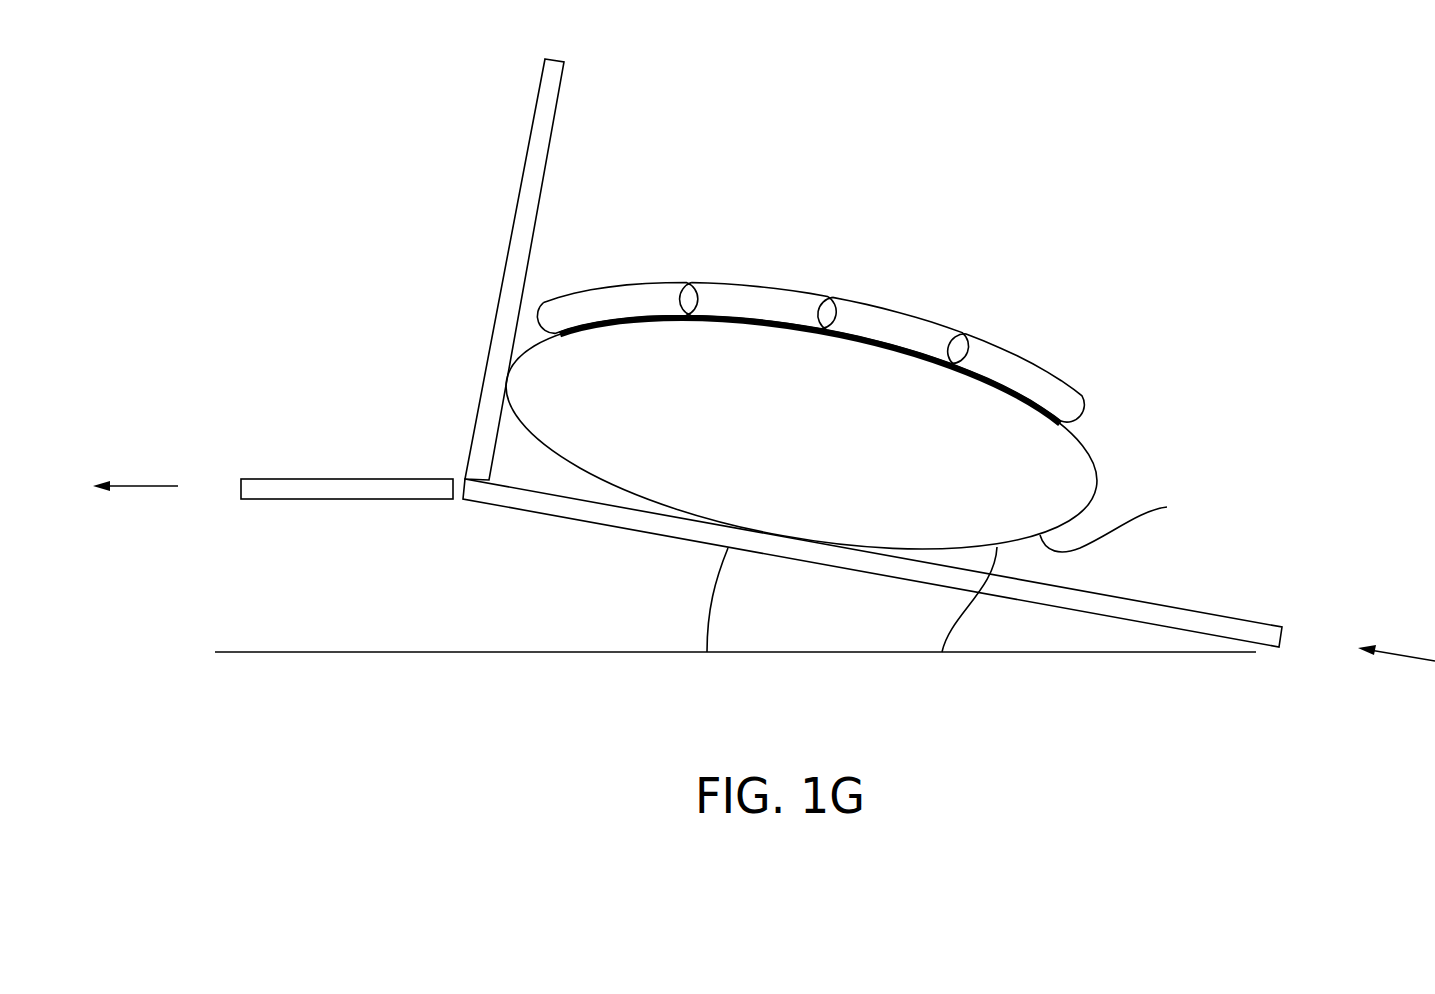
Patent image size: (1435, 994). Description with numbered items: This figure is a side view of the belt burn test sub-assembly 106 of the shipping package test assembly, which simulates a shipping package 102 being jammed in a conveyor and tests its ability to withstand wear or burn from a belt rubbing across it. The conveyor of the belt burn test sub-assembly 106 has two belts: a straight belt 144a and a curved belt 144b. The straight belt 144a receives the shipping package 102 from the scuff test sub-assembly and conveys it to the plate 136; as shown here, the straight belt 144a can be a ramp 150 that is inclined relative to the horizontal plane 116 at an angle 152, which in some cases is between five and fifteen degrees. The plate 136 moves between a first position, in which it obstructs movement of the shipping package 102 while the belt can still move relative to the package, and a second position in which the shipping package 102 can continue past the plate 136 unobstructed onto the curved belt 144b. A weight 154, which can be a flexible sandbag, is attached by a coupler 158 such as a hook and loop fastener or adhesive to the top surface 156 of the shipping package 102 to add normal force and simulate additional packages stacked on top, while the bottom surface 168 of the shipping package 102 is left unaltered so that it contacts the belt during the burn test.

The shipping package 102 is at (1098, 488).
The belt burn test sub-assembly 106 is at (1198, 117).
The horizontal plane 116 is at (857, 652).
The plate 136 is at (556, 122).
The straight belt 144a is at (1152, 605).
The curved belt 144b is at (346, 479).
The ramp 150 is at (540, 513).
The angle 152 is at (707, 598).
The weight 154 is at (907, 317).
The top surface 156 is at (758, 320).
The coupler 158 is at (1008, 387).
The bottom surface 168 is at (942, 652).